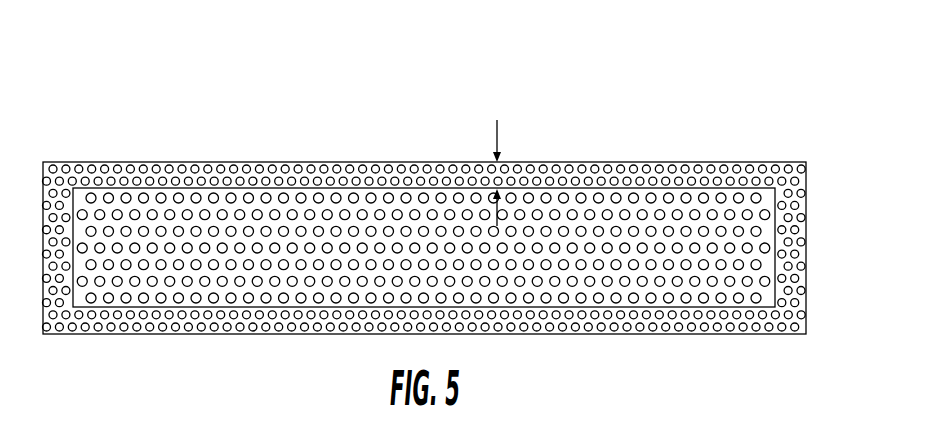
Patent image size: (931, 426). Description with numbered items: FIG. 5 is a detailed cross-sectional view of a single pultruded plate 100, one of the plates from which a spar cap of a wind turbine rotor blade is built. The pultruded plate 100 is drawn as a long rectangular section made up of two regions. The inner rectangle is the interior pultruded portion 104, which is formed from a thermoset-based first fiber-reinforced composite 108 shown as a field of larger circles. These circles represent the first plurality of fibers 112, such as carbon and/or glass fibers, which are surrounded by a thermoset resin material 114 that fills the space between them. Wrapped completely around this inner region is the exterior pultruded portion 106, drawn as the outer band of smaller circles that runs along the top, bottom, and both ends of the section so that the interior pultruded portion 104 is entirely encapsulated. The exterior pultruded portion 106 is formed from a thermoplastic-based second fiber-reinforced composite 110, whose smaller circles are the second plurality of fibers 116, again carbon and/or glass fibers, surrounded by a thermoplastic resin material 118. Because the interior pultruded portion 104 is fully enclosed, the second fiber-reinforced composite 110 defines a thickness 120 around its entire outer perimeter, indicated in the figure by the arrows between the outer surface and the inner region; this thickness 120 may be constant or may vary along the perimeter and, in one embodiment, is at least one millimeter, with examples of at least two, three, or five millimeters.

The pultruded plate 100 is at (766, 90).
The interior pultruded portion 104 is at (463, 247).
The first fiber-reinforced composite 108 is at (589, 190).
The exterior pultruded portion 106 is at (425, 211).
The second fiber-reinforced composite 110 is at (166, 162).
The first plurality of fibers 112 is at (760, 265).
The thermoset resin material 114 is at (592, 297).
The second plurality of fibers 116 is at (294, 168).
The thermoplastic resin material 118 is at (339, 168).
The thickness 120 is at (497, 133).